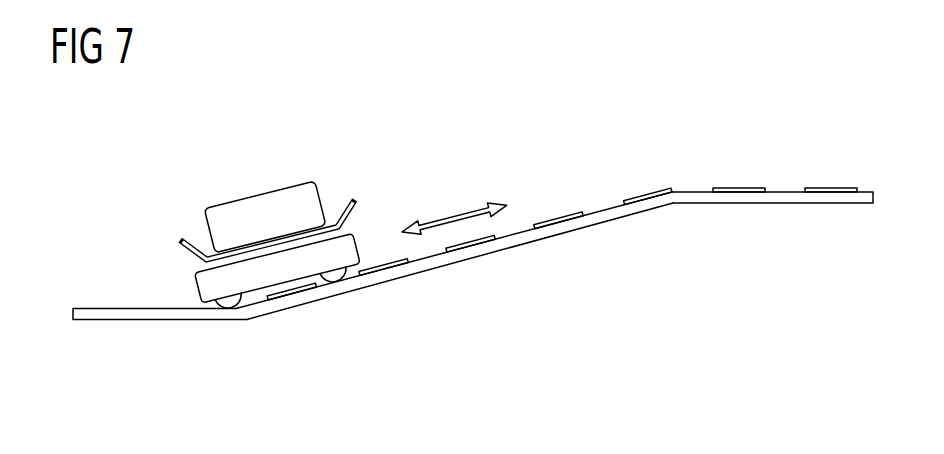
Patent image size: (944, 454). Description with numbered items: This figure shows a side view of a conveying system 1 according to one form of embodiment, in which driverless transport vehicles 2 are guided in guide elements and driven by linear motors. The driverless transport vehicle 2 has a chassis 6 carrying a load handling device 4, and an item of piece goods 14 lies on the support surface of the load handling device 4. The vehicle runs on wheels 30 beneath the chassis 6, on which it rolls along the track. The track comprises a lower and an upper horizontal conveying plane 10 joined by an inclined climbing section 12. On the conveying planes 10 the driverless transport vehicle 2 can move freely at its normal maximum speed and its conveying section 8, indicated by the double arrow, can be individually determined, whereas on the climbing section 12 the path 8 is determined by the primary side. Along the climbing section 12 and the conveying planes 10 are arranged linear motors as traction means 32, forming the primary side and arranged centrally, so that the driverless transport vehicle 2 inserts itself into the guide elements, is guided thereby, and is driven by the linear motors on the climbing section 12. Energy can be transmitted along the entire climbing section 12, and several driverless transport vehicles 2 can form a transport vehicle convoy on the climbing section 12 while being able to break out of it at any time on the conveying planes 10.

The conveying system 1 is at (97, 155).
The driverless transport vehicle 2 is at (254, 235).
The load handling device 4 is at (270, 232).
The chassis 6 is at (278, 268).
The conveying section 8 is at (451, 212).
The conveying plane 10 is at (73, 359).
The climbing section 12 is at (240, 374).
The item of piece goods 14 is at (265, 217).
The wheel 30 is at (281, 289).
The traction means 32 is at (643, 198).